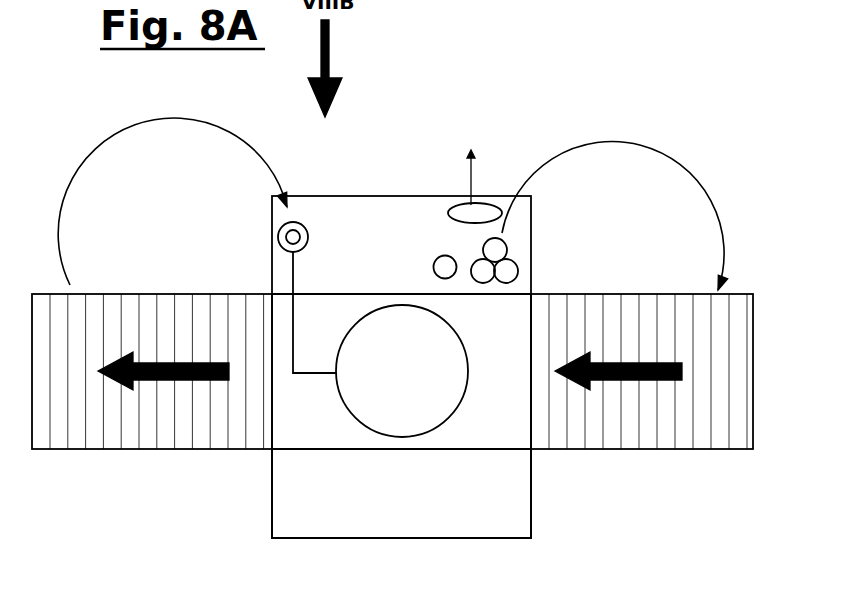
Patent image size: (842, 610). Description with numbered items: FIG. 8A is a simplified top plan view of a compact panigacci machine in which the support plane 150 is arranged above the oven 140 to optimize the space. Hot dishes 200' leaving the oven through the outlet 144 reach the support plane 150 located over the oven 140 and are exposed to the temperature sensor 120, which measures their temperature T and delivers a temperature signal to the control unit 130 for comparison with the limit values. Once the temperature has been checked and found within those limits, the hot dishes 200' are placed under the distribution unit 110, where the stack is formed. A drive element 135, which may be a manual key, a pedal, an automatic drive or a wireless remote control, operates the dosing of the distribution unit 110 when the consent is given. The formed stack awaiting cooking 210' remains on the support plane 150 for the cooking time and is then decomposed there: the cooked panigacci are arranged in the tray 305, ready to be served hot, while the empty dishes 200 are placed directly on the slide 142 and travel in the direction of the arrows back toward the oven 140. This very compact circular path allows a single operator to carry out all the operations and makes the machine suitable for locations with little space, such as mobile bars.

The distribution unit 110 is at (423, 417).
The temperature sensor 120 is at (293, 222).
The control unit 130 is at (653, 609).
The drive element 135 is at (797, 602).
The oven 140 is at (303, 448).
The slide 142 is at (668, 432).
The outlet 144 is at (160, 433).
The support plane 150 is at (378, 523).
The empty dishes 200 is at (547, 244).
The hot dishes 200' is at (244, 221).
The formed stack awaiting cooking 210' is at (402, 203).
The tray 305 is at (467, 205).